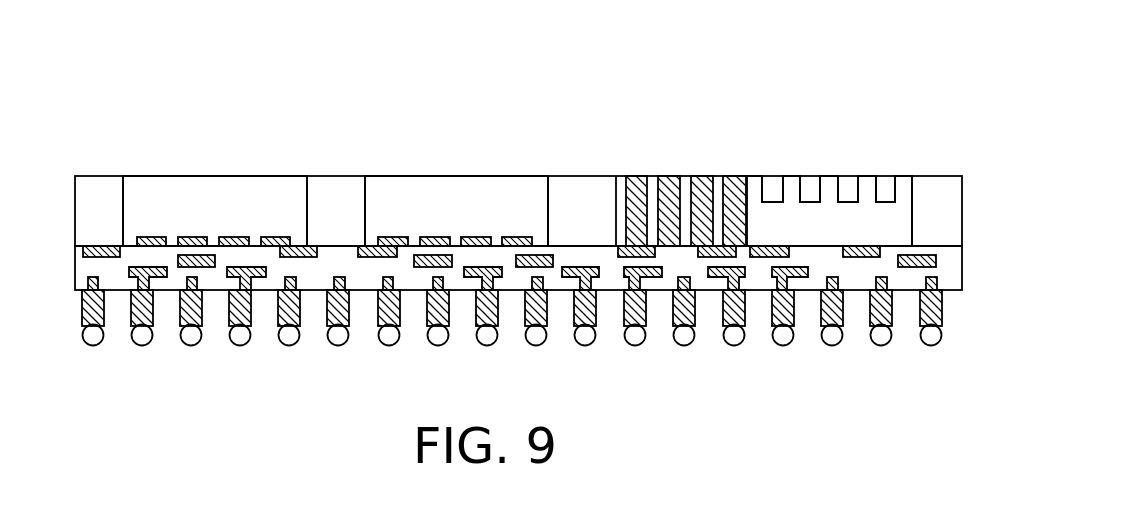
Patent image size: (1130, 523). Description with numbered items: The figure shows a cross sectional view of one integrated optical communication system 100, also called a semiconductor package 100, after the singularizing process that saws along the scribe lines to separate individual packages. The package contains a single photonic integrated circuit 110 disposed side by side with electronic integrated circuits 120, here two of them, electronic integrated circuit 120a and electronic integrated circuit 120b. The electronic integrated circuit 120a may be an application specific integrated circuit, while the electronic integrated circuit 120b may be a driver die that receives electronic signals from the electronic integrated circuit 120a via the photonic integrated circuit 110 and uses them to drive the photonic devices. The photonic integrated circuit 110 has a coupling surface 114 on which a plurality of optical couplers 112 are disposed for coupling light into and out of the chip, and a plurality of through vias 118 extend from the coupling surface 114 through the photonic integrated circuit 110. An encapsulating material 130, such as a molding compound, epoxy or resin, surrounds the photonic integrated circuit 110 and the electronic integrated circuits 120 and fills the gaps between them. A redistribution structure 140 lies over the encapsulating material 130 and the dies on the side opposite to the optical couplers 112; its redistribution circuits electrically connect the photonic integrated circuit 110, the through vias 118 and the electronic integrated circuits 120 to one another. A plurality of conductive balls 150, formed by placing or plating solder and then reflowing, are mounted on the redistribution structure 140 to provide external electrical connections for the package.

The integrated optical communication system 100 is at (594, 187).
The photonic integrated circuit 110 is at (913, 210).
The optical couplers 112 is at (886, 185).
The coupling surface 114 is at (754, 175).
The through vias 118 is at (672, 188).
The electronic integrated circuits 120 is at (335, 175).
The electronic integrated circuit 120a is at (200, 190).
The electronic integrated circuit 120b is at (443, 190).
The encapsulating material 130 is at (953, 200).
The redistribution structure 140 is at (955, 275).
The conductive balls 150 is at (943, 332).